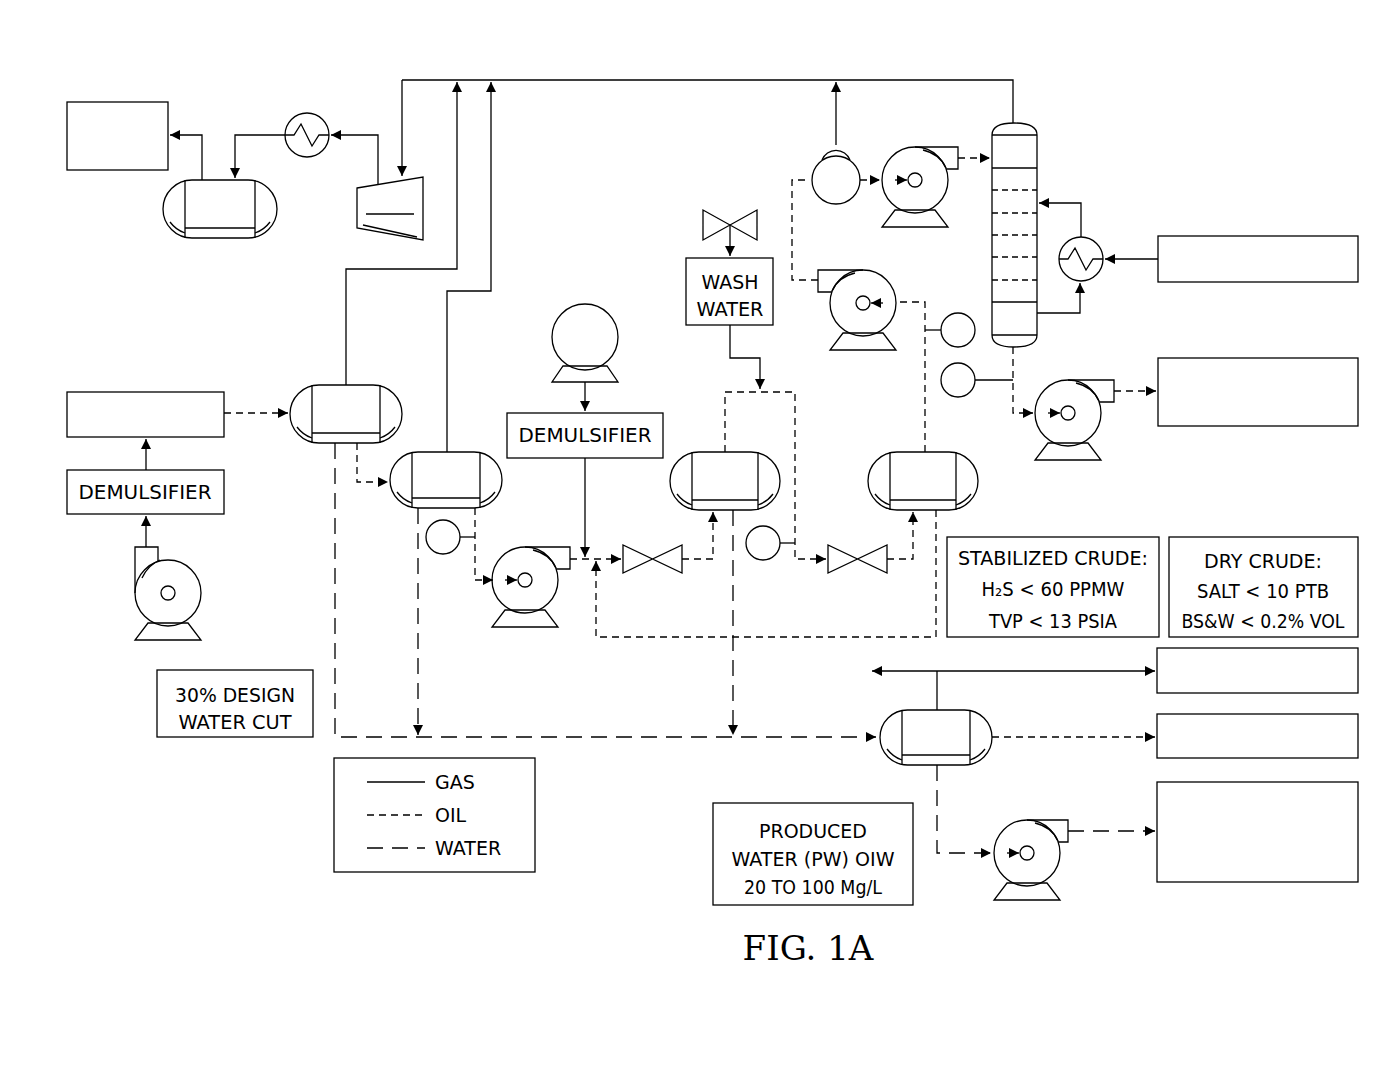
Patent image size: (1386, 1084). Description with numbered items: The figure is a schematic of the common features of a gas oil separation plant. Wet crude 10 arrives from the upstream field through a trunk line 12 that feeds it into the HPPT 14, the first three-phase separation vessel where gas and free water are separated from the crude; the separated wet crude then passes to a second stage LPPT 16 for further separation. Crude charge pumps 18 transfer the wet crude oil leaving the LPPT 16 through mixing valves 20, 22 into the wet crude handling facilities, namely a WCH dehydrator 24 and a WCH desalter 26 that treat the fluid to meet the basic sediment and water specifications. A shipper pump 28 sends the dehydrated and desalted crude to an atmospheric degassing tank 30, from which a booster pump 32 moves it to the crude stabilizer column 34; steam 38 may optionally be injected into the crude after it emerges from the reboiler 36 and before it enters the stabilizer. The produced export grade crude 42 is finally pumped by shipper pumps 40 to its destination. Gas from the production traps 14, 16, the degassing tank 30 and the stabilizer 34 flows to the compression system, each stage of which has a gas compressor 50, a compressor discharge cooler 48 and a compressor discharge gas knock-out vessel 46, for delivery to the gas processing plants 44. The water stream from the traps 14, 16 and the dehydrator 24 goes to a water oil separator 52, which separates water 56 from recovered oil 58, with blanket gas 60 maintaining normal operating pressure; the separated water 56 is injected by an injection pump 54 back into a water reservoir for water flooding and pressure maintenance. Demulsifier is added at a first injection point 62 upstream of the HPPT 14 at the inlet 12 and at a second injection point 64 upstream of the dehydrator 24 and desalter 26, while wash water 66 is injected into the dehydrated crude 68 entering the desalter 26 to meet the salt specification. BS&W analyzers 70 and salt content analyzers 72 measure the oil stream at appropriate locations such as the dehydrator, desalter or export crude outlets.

The wet crude 10 is at (136, 391).
The trunk line 12 is at (255, 411).
The HPPT 14 is at (334, 427).
The LPPT 16 is at (434, 493).
The crude charge pumps 18 is at (522, 629).
The mixing valve 20 is at (647, 574).
The mixing valve 22 is at (870, 574).
The WCH dehydrator 24 is at (713, 494).
The WCH desalter 26 is at (911, 494).
The shipper pump 28 is at (866, 351).
The degassing tank 30 is at (822, 152).
The booster pump 32 is at (915, 146).
The crude stabilizer column 34 is at (1038, 180).
The reboiler 36 is at (1102, 249).
The steam 38 is at (1260, 235).
The shipper pumps 40 is at (1073, 461).
The export grade crude 42 is at (1260, 357).
The gas processing plants 44 is at (118, 101).
The compressor discharge gas knock-out vessel 46 is at (208, 222).
The compressor discharge cooler 48 is at (306, 112).
The gas compressor 50 is at (357, 205).
The water oil separator 52 is at (924, 750).
The injection pump 54 is at (1026, 902).
The water 56 is at (1260, 883).
The recovered oil 58 is at (1156, 749).
The blanket gas 60 is at (1156, 683).
The first demulsifier injection point 62 is at (134, 592).
The second demulsifier injection point 64 is at (580, 304).
The wash water 66 is at (722, 209).
The dehydrated crude 68 is at (724, 400).
The BS&W analyzers 70 is at (960, 312).
The salt content analyzers 72 is at (446, 555).